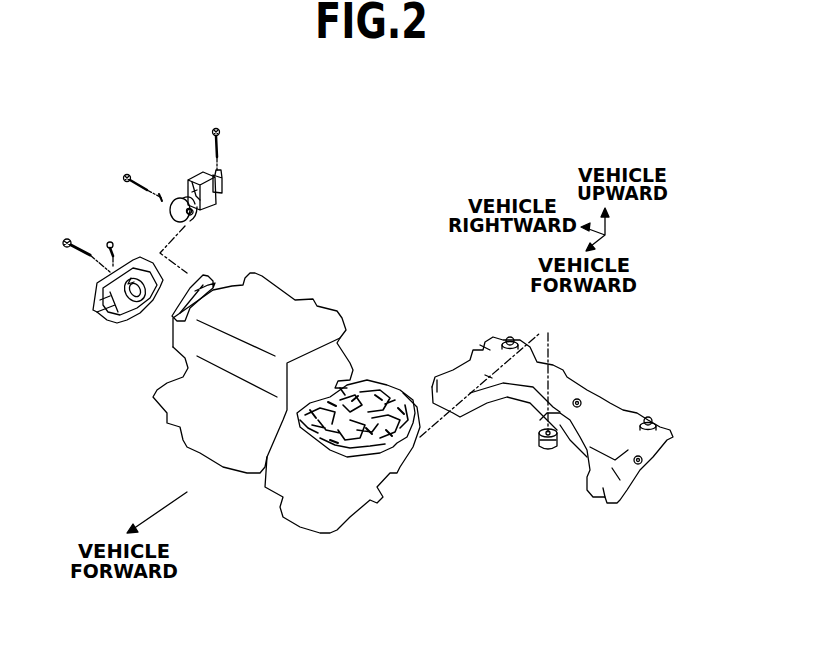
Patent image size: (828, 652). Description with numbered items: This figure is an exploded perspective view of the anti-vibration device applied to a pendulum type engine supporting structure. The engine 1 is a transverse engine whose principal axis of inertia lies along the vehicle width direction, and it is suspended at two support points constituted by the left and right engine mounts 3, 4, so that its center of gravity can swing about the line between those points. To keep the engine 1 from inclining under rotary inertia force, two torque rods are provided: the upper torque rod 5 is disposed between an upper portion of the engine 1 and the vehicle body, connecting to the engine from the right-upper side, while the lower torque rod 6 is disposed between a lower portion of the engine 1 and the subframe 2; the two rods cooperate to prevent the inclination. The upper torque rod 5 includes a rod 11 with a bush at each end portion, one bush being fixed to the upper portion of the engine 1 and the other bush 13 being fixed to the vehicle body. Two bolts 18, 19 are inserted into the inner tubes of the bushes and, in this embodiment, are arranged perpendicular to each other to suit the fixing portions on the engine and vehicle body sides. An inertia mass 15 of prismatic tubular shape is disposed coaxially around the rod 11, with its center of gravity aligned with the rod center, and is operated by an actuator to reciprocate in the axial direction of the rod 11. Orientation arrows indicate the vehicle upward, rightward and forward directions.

The engine 1 is at (293, 298).
The subframe 2 is at (493, 337).
The left engine mount 3 is at (130, 267).
The right engine mount 4 is at (384, 388).
The upper torque rod 5 is at (228, 203).
The lower torque rod 6 is at (522, 437).
The rod 11 is at (205, 212).
The bush 13 is at (228, 180).
The inertia mass 15 is at (201, 172).
The bolt 18 is at (131, 177).
The bolt 19 is at (221, 139).